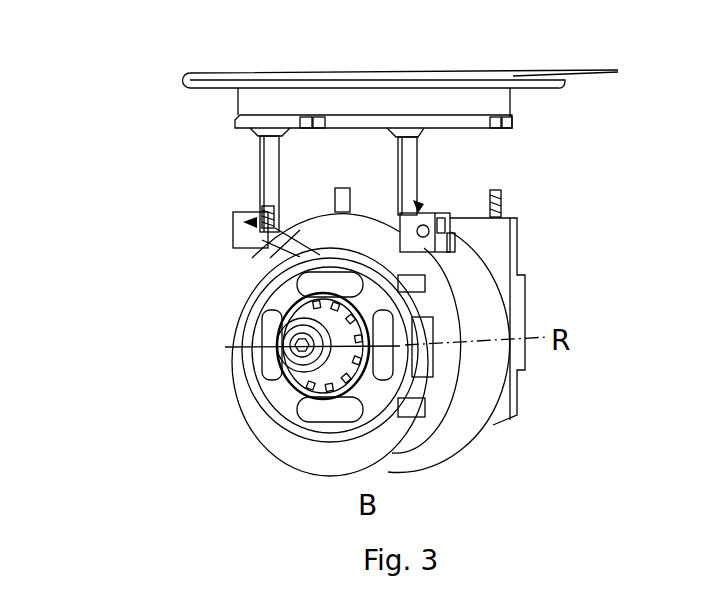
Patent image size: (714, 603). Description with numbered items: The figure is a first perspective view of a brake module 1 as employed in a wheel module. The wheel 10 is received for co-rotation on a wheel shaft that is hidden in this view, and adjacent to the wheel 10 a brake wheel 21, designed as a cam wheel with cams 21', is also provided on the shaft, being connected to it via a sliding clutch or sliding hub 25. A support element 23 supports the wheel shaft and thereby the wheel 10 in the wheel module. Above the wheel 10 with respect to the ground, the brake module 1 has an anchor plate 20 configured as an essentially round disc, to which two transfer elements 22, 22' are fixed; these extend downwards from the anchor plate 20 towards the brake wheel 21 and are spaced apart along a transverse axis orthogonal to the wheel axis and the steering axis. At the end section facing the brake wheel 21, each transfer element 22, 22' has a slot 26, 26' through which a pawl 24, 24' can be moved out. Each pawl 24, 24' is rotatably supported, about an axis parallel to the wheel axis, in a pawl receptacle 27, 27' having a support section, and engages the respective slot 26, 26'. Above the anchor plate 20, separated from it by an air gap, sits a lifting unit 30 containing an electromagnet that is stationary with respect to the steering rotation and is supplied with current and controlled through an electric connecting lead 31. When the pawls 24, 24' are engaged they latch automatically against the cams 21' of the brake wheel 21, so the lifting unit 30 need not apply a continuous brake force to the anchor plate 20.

The brake module 1 is at (64, 68).
The wheel 10 is at (453, 443).
The anchor plate 20 is at (236, 118).
The brake wheel 21 is at (292, 362).
The cams 21' is at (292, 350).
The transfer element 22 is at (231, 184).
The transfer element 22' is at (371, 176).
The support element 23 is at (512, 262).
The pawl 24 is at (259, 257).
The pawl 24' is at (326, 219).
The sliding hub 25 is at (377, 388).
The slot 26 is at (218, 235).
The slot 26' is at (443, 205).
The pawl receptacle 27 is at (207, 212).
The pawl receptacle 27' is at (530, 200).
The lifting unit 30 is at (236, 73).
The electric connecting lead 31 is at (543, 71).